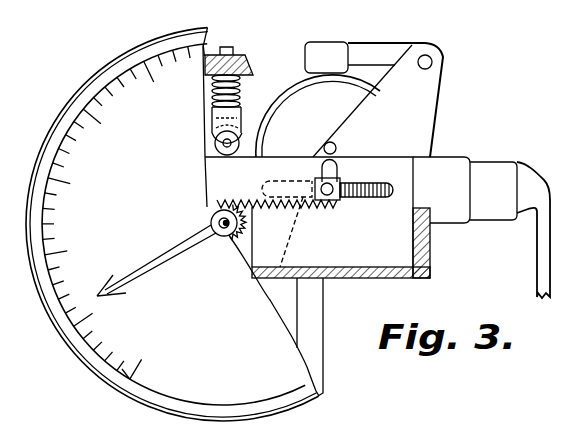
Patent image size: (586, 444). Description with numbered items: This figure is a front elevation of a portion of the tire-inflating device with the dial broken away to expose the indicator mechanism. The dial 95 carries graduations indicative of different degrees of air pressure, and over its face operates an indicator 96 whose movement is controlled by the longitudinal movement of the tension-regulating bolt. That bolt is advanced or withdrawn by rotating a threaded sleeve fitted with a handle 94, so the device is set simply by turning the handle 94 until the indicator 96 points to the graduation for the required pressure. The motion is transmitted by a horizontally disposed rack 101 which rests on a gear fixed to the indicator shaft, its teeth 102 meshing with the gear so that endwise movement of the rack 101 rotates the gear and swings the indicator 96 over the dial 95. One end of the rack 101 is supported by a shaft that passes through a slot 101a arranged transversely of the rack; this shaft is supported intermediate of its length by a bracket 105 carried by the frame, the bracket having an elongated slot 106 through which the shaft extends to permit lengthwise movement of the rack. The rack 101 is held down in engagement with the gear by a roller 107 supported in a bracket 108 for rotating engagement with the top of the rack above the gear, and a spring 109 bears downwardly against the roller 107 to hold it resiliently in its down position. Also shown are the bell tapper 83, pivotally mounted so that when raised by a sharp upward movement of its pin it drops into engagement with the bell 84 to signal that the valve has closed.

The bell tapper 83 is at (356, 44).
The bell 84 is at (357, 92).
The handle 94 is at (537, 254).
The dial 95 is at (110, 390).
The indicator 96 is at (166, 251).
The rack 101 is at (270, 157).
The slot 101a is at (347, 157).
The teeth 102 is at (302, 195).
The bracket 105 is at (414, 185).
The elongated slot 106 is at (372, 199).
The roller 107 is at (245, 120).
The bracket 108 is at (240, 52).
The spring 109 is at (242, 83).